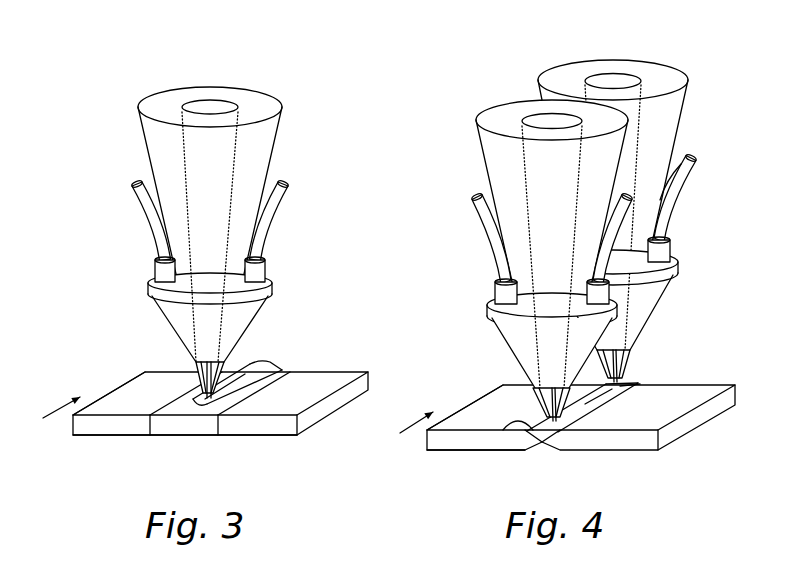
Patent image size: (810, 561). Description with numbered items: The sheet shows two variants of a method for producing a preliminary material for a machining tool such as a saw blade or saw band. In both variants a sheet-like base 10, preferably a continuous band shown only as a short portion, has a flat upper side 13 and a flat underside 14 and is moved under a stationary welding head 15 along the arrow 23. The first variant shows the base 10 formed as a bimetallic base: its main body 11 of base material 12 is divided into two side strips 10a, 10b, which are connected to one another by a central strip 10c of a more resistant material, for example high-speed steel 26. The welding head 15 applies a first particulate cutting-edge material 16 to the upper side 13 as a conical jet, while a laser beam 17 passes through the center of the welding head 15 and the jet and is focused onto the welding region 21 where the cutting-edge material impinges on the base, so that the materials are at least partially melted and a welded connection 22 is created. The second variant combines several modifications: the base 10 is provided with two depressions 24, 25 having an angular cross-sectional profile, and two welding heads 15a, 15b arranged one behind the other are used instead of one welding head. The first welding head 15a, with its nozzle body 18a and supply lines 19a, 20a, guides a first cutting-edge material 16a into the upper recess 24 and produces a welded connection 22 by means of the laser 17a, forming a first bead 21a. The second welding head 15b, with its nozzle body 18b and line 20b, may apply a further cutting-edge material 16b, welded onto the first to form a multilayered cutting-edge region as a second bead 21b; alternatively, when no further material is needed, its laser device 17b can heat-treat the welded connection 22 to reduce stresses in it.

In FIG. 3, the sheet-like base 10 is at (210, 402).
In FIG. 4, the sheet-like base 10 is at (605, 414).
In FIG. 3, the side strip 10a is at (100, 428).
In FIG. 3, the side strip 10b is at (273, 430).
In FIG. 3, the central strip 10c is at (187, 427).
In FIG. 3, the main body 11 is at (343, 380).
In FIG. 4, the main body 11 is at (707, 395).
In FIG. 3, the base material 12 is at (102, 433).
In FIG. 4, the base material 12 is at (683, 427).
In FIG. 3, the upper side 13 is at (135, 378).
In FIG. 4, the upper side 13 is at (488, 408).
In FIG. 3, the underside 14 is at (128, 440).
In FIG. 4, the underside 14 is at (470, 455).
In FIG. 3, the welding head 15 is at (249, 229).
In FIG. 4, the first welding head 15a is at (562, 273).
In FIG. 4, the second welding head 15b is at (661, 205).
In FIG. 3, the particulate cutting-edge material 16 is at (198, 380).
In FIG. 4, the first cutting-edge material 16a is at (533, 392).
In FIG. 4, the further cutting-edge material 16b is at (646, 328).
In FIG. 3, the laser beam 17 is at (212, 108).
In FIG. 4, the laser 17a is at (540, 118).
In FIG. 4, the laser device 17b is at (612, 78).
In FIG. 4, the first nozzle body 18a is at (510, 334).
In FIG. 4, the second nozzle body 18b is at (655, 295).
In FIG. 4, the gas supply tube 19a is at (483, 220).
In FIG. 4, the tube fitting 20a is at (608, 283).
In FIG. 4, the second gas supply tube 20b is at (668, 222).
In FIG. 3, the welding region 21 is at (261, 397).
In FIG. 4, the first weld bead 21a is at (584, 412).
In FIG. 4, the second weld bead 21b is at (628, 378).
In FIG. 3, the welded connection 22 is at (250, 365).
In FIG. 4, the welded connection 22 is at (640, 384).
In FIG. 3, the arrow 23 is at (60, 402).
In FIG. 4, the arrow 23 is at (412, 414).
In FIG. 4, the upper depression 24 is at (527, 420).
In FIG. 4, the lower depression 25 is at (540, 452).
In FIG. 3, the high-speed steel 26 is at (200, 430).